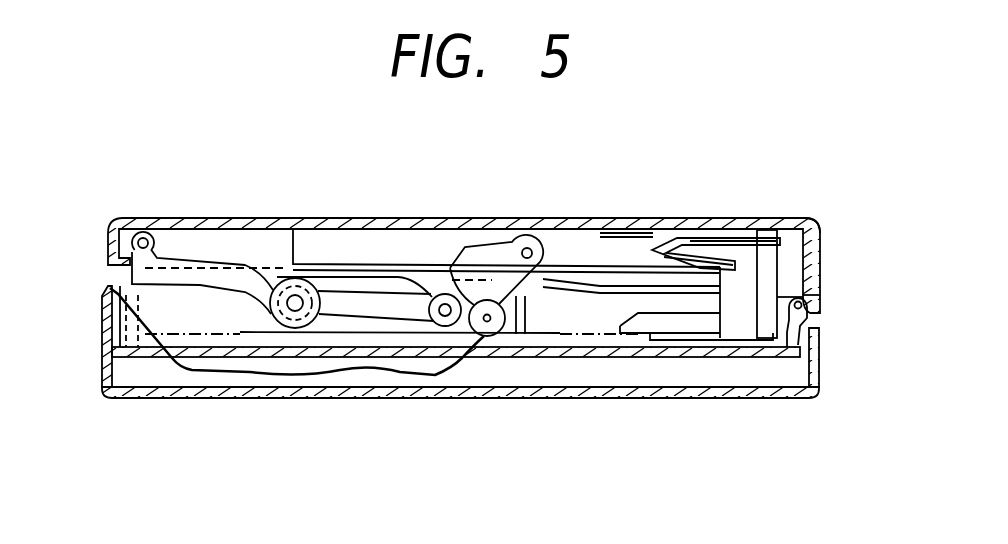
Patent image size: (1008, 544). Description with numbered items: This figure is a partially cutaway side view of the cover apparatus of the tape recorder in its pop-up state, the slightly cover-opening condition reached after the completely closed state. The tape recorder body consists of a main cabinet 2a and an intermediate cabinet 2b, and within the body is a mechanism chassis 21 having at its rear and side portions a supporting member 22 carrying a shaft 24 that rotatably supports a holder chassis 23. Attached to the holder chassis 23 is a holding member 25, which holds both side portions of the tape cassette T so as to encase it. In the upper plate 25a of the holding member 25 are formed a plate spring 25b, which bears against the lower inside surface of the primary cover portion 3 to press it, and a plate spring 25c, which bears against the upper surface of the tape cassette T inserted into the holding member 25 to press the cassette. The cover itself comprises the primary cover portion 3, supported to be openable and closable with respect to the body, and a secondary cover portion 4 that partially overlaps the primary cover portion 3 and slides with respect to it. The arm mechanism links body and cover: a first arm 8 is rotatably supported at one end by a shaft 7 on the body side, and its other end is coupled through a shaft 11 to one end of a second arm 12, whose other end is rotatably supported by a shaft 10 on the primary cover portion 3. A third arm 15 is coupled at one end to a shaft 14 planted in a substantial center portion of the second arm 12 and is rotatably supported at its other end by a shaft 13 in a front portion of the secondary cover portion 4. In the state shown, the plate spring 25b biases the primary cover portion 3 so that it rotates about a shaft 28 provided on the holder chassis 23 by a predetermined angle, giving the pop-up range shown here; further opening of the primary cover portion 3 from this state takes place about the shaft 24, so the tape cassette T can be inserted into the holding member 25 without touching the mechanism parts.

The main cabinet 2a is at (643, 400).
The intermediate cabinet 2b is at (107, 322).
The primary cover portion 3 is at (577, 218).
The secondary cover portion 4 is at (260, 218).
The shaft 7 is at (488, 322).
The first arm 8 is at (478, 338).
The shaft 10 is at (527, 248).
The shaft 11 is at (294, 306).
The second arm 12 is at (468, 253).
The shaft 13 is at (142, 232).
The shaft 14 is at (445, 317).
The third arm 15 is at (201, 275).
The mechanism chassis 21 is at (578, 358).
The supporting member 22 is at (782, 343).
The holder chassis 23 is at (820, 262).
The shaft 24 is at (826, 345).
The holding member 25 is at (713, 325).
The upper plate 25a is at (757, 236).
The plate spring 25b is at (677, 245).
The plate spring 25c is at (732, 262).
The shaft 28 is at (813, 227).
The tape cassette T is at (183, 334).